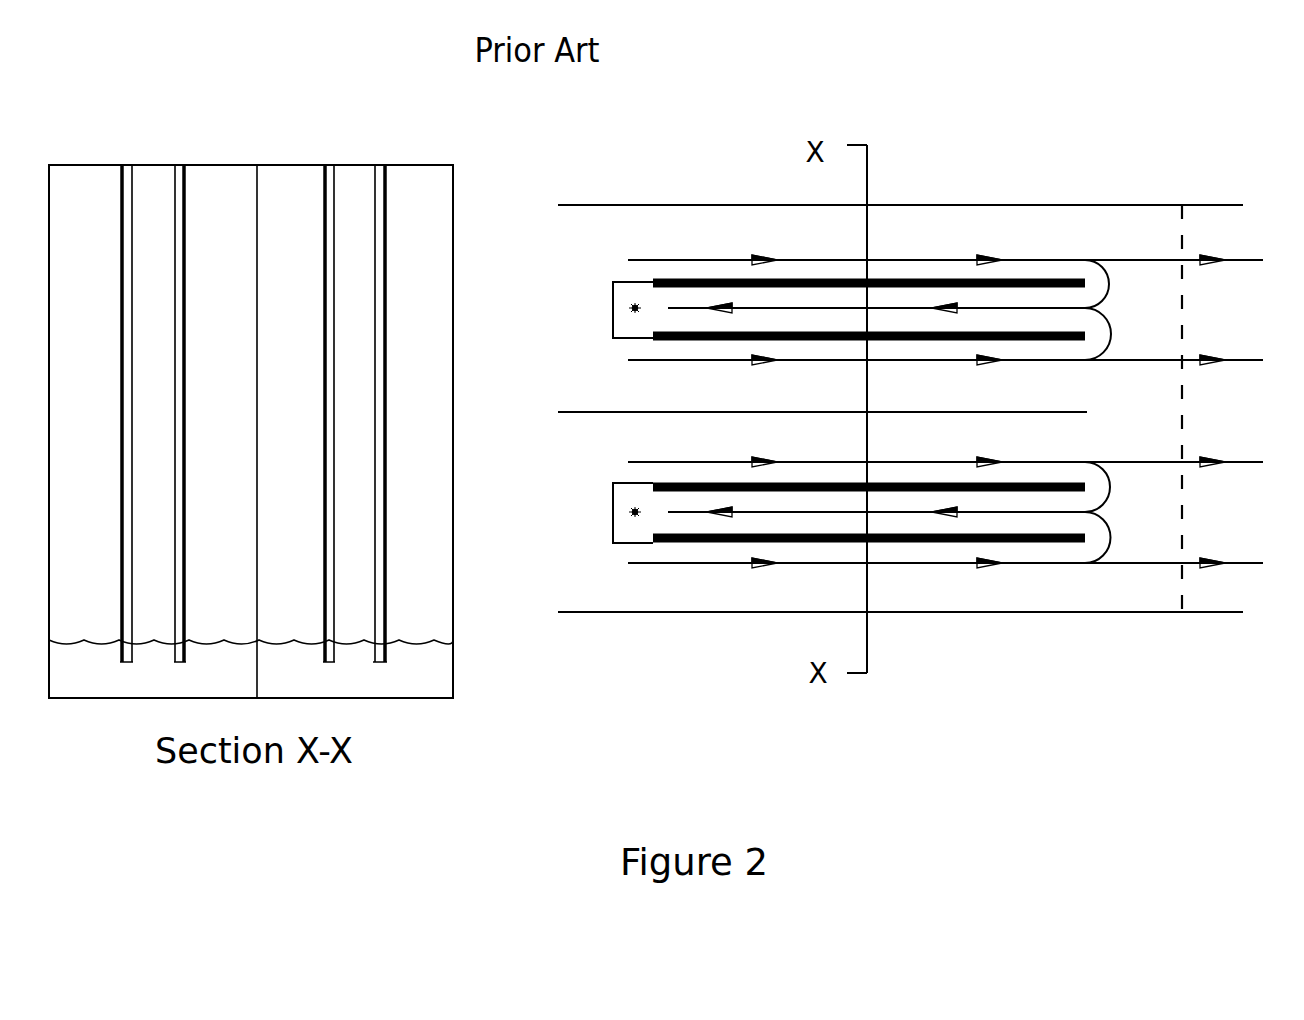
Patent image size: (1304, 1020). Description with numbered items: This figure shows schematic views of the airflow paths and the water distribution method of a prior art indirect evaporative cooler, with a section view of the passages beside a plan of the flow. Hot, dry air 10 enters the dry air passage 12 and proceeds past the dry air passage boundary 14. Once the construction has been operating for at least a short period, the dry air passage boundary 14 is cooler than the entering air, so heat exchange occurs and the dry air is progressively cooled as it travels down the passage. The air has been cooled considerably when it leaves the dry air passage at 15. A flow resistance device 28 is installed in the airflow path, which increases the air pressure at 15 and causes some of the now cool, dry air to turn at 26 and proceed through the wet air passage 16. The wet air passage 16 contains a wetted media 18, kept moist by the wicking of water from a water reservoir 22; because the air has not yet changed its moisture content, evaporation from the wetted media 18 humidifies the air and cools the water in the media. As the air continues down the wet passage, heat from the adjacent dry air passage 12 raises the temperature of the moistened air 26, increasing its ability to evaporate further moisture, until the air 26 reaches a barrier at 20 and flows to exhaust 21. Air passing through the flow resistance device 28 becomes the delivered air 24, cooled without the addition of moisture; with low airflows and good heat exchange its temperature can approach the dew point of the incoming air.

The hot, dry air 10 is at (587, 412).
The dry air passage 12 is at (230, 238).
The dry air passage boundary 14 is at (332, 205).
The dry air passage exit 15 is at (945, 392).
The wet air passage 16 is at (360, 283).
The wetted media 18 is at (952, 540).
The barrier 20 is at (612, 523).
The exhaust 21 is at (635, 302).
The water reservoir 22 is at (412, 673).
The delivered air 24 is at (1253, 302).
The turning cool dry air 26 is at (1110, 517).
The flow resistance device 28 is at (1182, 525).